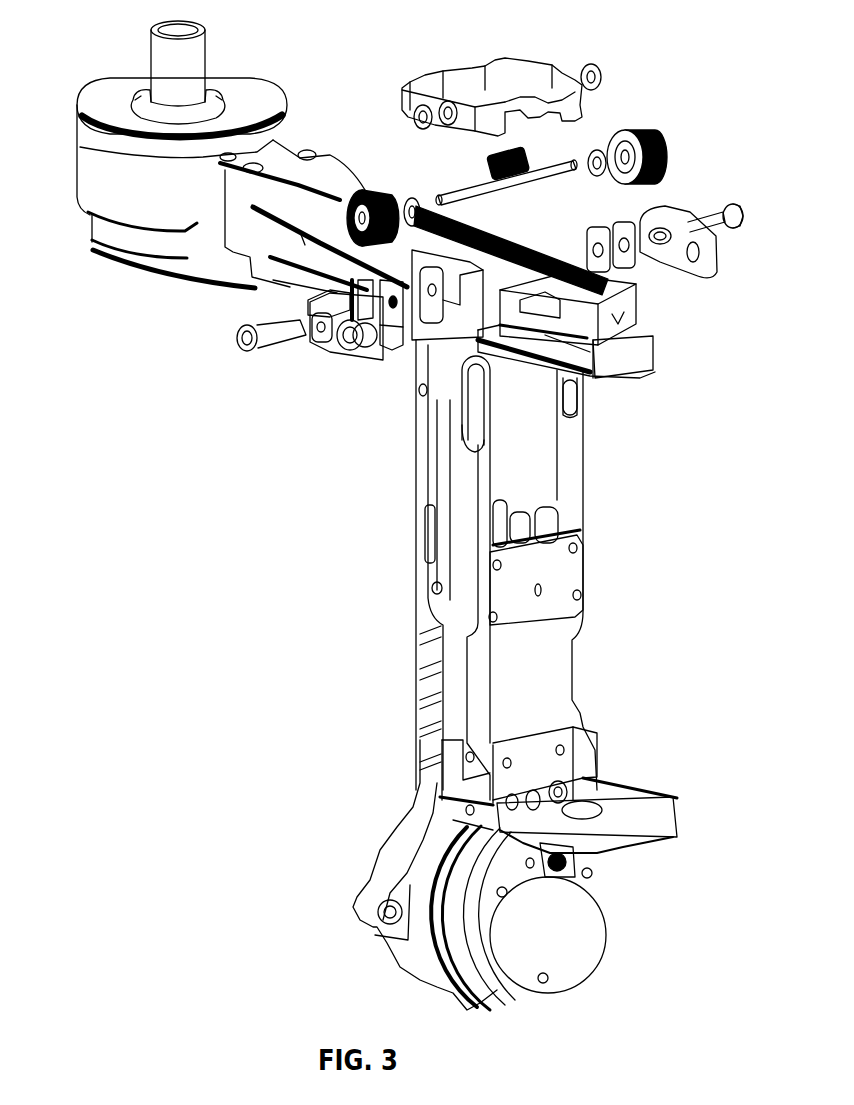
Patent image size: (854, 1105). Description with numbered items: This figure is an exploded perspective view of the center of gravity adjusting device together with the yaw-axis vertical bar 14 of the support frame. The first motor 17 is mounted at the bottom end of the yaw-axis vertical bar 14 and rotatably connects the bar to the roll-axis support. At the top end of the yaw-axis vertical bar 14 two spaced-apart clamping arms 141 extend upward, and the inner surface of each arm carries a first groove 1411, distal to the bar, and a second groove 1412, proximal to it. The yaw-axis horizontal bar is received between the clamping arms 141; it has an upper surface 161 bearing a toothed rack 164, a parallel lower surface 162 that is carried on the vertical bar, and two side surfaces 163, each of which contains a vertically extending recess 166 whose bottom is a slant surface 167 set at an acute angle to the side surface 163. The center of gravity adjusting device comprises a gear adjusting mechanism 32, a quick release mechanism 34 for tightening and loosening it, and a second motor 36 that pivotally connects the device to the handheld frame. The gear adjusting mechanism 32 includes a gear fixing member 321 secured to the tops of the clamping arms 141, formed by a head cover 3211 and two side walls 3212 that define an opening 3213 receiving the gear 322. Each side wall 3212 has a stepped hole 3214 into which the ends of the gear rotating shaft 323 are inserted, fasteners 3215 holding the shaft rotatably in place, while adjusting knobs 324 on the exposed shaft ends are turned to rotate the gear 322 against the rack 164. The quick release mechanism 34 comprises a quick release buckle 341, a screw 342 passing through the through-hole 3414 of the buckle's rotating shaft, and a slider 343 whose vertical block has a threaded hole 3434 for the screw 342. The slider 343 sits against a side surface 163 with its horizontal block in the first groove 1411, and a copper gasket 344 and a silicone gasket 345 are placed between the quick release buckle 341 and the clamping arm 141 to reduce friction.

The second motor 36 is at (123, 185).
The recess 166 is at (317, 243).
The toothed rack 164 is at (432, 190).
The head cover 3211 is at (525, 62).
The stepped hole 3214 is at (418, 110).
The side wall 3212 is at (440, 124).
The opening 3213 is at (523, 134).
The fastener 3215 is at (592, 63).
The gear fixing member 321 is at (583, 100).
The gear adjusting mechanism 32 is at (640, 28).
The gear 322 is at (528, 148).
The gear rotating shaft 323 is at (590, 145).
The adjusting knob 324 is at (653, 133).
The first groove 1411 is at (575, 250).
The upper surface 161 is at (637, 282).
The side surface 163 is at (615, 308).
The slant surface 167 is at (633, 327).
The lower surface 162 is at (643, 367).
The threaded hole 3434 is at (607, 377).
The clamping arm 141 is at (560, 385).
The second groove 1412 is at (570, 417).
The quick release mechanism 34 is at (352, 487).
The through-hole 3414 is at (307, 322).
The screw 342 is at (258, 346).
The quick release buckle 341 is at (327, 350).
The copper gasket 344 is at (355, 357).
The silicone gasket 345 is at (390, 355).
The slider 343 is at (400, 352).
The yaw-axis vertical bar 14 is at (455, 612).
The first motor 17 is at (423, 855).